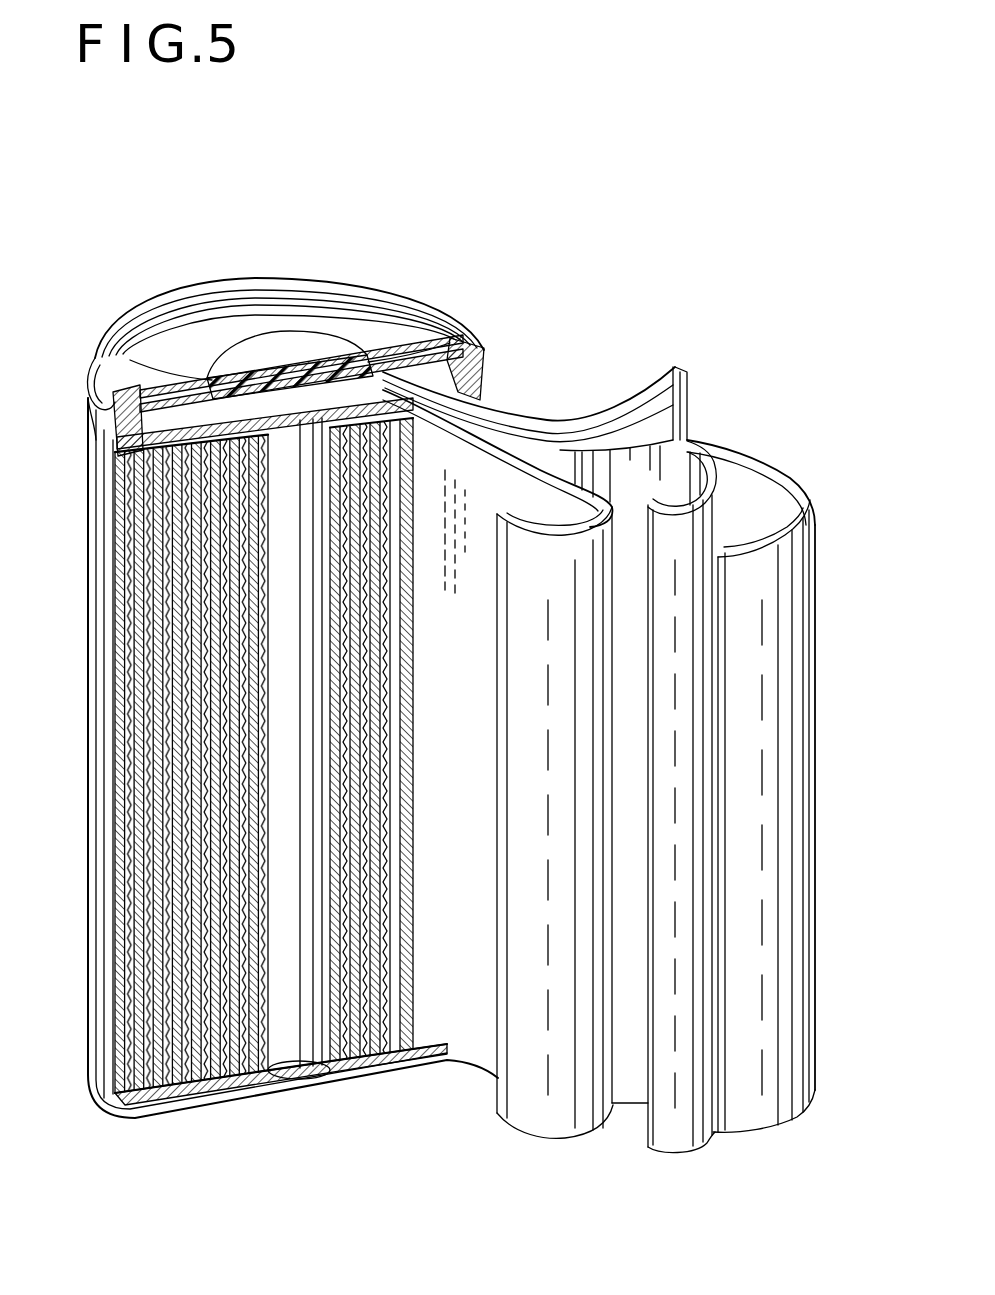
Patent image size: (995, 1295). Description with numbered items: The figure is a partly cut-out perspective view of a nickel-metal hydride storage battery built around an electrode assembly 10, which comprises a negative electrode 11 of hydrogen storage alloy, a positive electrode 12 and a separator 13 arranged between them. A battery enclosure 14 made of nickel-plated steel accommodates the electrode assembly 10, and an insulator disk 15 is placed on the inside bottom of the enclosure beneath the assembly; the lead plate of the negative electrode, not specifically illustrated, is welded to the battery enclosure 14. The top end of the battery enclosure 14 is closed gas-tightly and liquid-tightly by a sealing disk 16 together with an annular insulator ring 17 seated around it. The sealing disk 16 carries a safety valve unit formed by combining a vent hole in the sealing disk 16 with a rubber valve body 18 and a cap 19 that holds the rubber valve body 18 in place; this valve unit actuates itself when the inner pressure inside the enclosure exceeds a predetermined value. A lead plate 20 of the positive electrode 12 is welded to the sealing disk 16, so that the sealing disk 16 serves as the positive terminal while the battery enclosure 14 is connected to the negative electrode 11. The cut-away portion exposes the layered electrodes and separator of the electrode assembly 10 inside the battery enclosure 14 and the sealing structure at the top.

The electrode assembly 10 is at (830, 490).
The negative electrode 11 is at (795, 665).
The positive electrode 12 is at (590, 983).
The separator 13 is at (693, 813).
The battery enclosure 14 is at (95, 812).
The insulator disk 15 is at (262, 1092).
The sealing disk 16 is at (416, 345).
The annular insulator ring 17 is at (95, 372).
The rubber valve body 18 is at (284, 375).
The cap 19 is at (255, 343).
The lead plate 20 is at (108, 448).